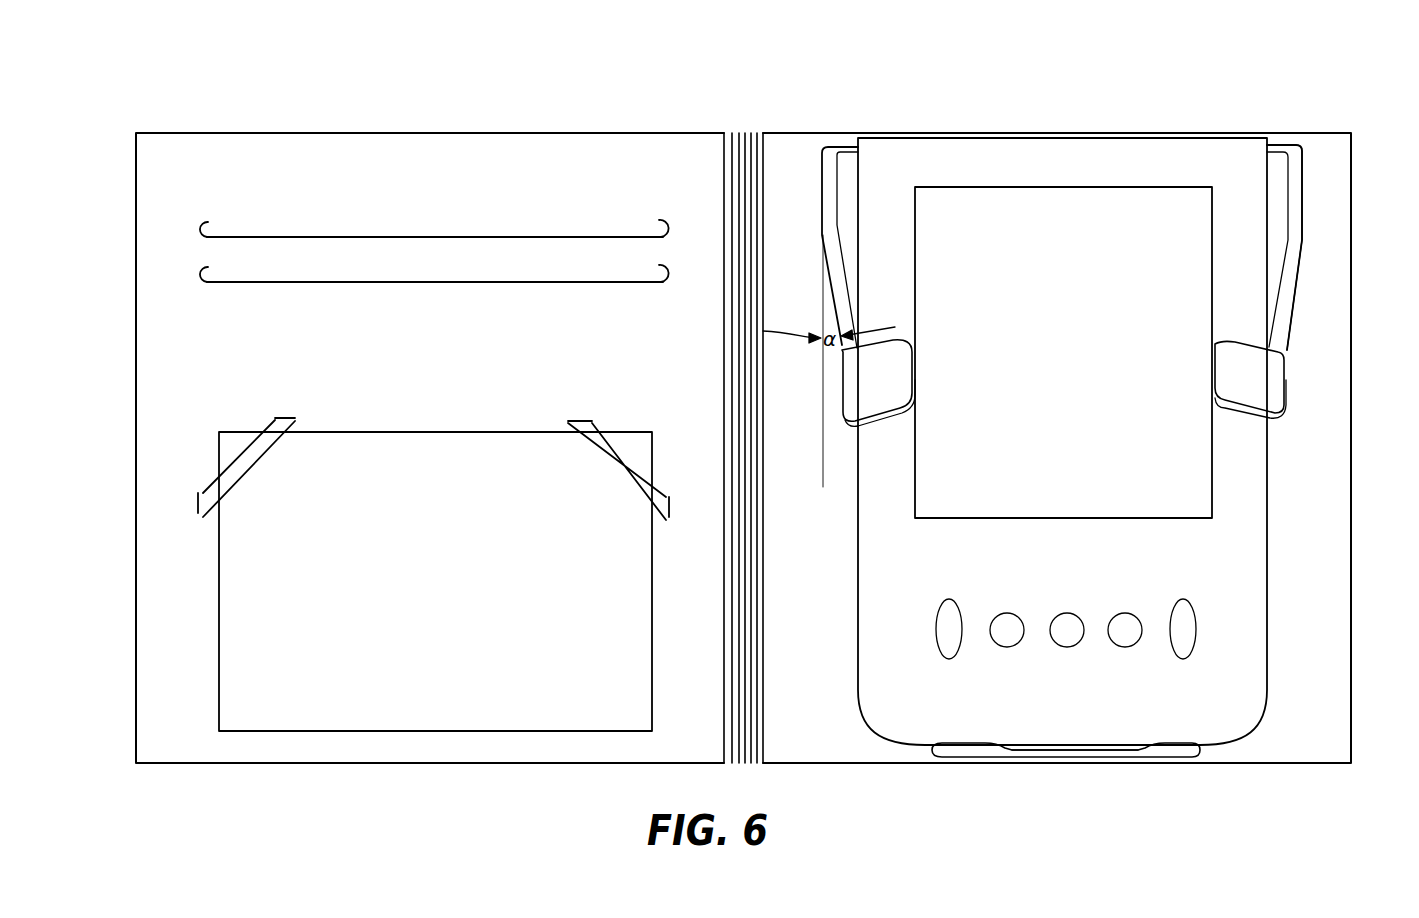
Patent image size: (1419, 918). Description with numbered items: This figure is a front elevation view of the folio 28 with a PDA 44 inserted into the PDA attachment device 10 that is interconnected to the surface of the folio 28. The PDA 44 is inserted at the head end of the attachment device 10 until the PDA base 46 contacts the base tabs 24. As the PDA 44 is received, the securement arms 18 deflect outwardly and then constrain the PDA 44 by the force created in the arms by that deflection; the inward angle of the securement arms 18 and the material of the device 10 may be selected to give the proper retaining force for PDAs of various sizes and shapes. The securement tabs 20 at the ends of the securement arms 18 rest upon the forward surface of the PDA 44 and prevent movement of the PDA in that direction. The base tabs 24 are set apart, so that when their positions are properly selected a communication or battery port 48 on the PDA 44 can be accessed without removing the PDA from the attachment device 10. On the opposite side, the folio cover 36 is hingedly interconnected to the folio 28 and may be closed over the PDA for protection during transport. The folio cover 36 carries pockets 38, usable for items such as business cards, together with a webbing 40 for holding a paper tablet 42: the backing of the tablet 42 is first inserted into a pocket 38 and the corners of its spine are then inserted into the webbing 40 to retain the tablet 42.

The PDA attachment device 10 is at (1303, 150).
The securement arms 18 is at (838, 270).
The securement tabs 20 is at (890, 357).
The base tabs 24 is at (958, 750).
The folio 28 is at (845, 115).
The folio cover 36 is at (565, 134).
The pockets 38 is at (305, 282).
The webbing 40 is at (228, 470).
The paper tablet 42 is at (257, 618).
The PDA 44 is at (1095, 157).
The PDA base 46 is at (1230, 738).
The communication or battery port 48 is at (1045, 746).